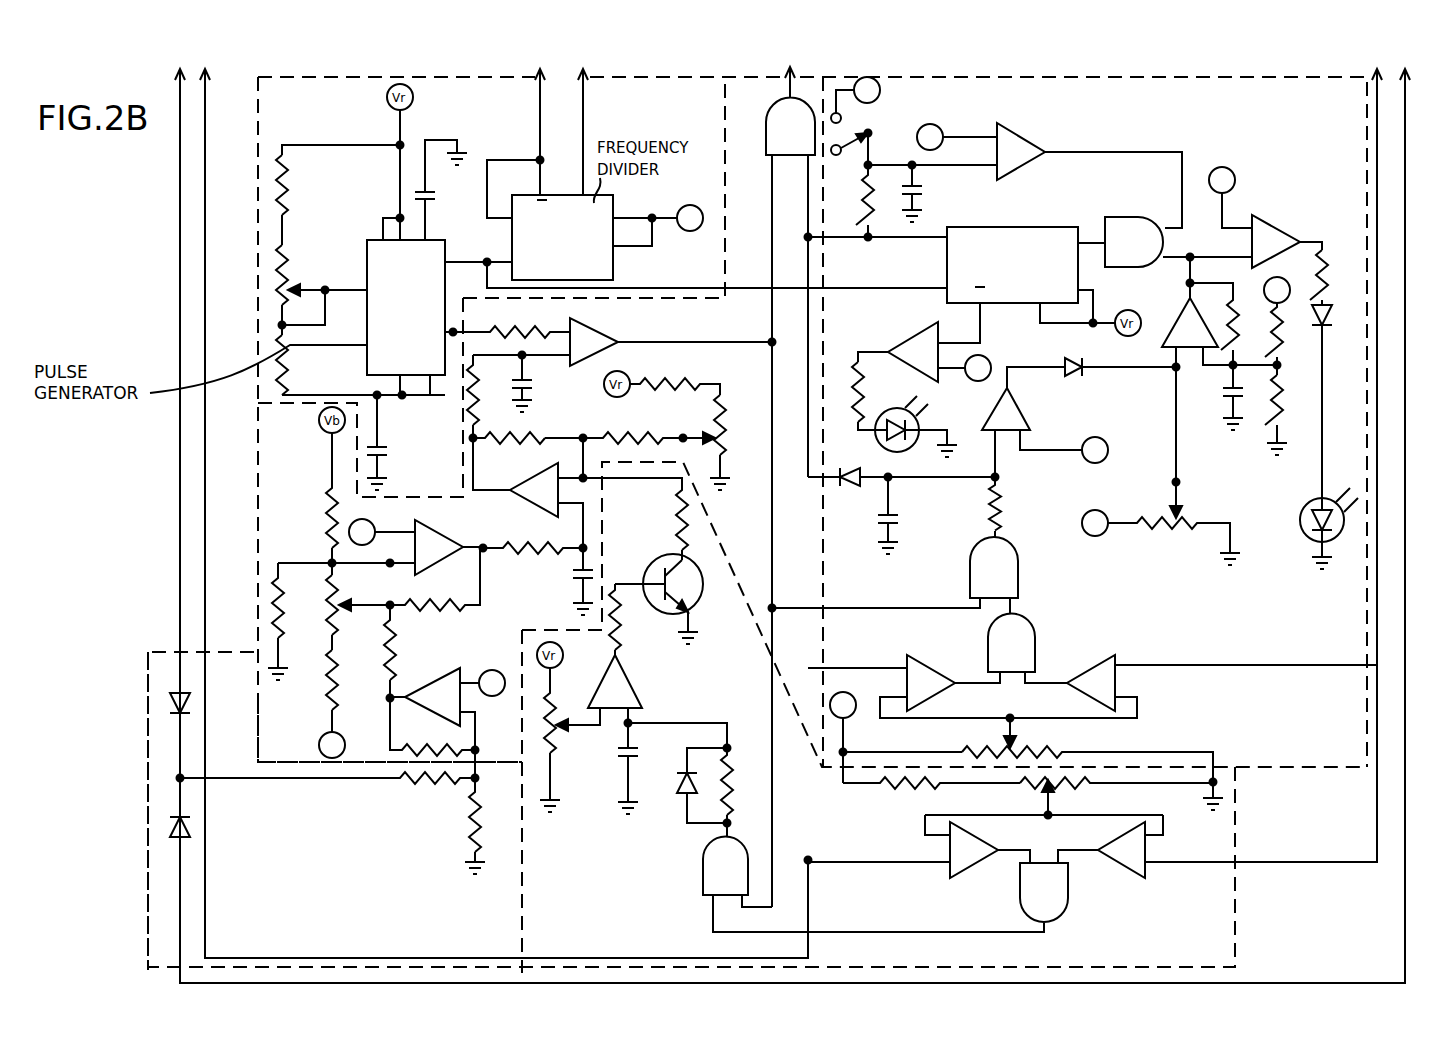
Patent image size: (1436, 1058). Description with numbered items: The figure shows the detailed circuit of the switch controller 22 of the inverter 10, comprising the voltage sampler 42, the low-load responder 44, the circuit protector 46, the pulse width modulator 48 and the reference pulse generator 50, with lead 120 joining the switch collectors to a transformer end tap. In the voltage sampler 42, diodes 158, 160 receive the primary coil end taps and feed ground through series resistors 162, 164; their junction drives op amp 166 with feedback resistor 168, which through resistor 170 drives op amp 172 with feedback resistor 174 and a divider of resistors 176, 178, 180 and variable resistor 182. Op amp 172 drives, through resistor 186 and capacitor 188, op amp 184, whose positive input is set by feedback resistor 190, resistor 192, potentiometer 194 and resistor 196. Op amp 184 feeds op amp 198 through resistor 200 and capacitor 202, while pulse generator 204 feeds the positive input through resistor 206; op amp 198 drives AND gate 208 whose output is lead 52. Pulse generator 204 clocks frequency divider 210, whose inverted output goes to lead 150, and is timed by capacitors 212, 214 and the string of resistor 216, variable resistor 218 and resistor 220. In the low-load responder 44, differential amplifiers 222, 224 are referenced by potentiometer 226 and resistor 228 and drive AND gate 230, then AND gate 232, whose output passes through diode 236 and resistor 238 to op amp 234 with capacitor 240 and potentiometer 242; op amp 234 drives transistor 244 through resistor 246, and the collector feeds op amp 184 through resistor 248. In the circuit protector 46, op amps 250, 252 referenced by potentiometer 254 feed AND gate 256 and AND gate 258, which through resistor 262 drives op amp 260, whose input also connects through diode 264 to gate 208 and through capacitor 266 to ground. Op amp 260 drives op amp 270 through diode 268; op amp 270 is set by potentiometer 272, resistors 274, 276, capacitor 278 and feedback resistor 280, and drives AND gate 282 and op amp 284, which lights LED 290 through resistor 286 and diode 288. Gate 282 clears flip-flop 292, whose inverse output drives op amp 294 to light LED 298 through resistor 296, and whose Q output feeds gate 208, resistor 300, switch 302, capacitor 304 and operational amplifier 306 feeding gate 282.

The inverter 10 is at (143, 193).
The switch controller 22 is at (170, 252).
The voltage sampler 42 is at (148, 652).
The low-load responder 44 is at (1235, 920).
The circuit protector 46 is at (1367, 180).
The pulse width modulator 48 is at (258, 560).
The reference pulse generator 50 is at (258, 157).
The lead 52 is at (786, 84).
The lead 120 is at (180, 335).
The lead 150 is at (540, 108).
The diode 158 is at (170, 703).
The diode 160 is at (170, 828).
The resistor 162 is at (412, 790).
The resistor 164 is at (468, 835).
The op amp 166 is at (418, 680).
The feedback resistor 168 is at (408, 740).
The resistor 170 is at (378, 660).
The op amp 172 is at (440, 530).
The feedback resistor 174 is at (440, 612).
The resistor 176 is at (328, 512).
The resistor 178 is at (268, 605).
The resistor 180 is at (326, 695).
The variable resistor 182 is at (322, 606).
The op amp 184 is at (535, 480).
The resistor 186 is at (528, 545).
The capacitor 188 is at (573, 574).
The feedback resistor 190 is at (528, 430).
The resistor 192 is at (655, 428).
The potentiometer 194 is at (728, 415).
The resistor 196 is at (685, 378).
The op amp 198 is at (600, 328).
The resistor 200 is at (470, 410).
The capacitor 202 is at (532, 378).
The pulse generator 204 is at (406, 307).
The resistor 206 is at (520, 322).
The AND gate 208 is at (766, 123).
The frequency divider 210 is at (595, 174).
The capacitor 212 is at (437, 207).
The capacitor 214 is at (391, 442).
The resistor 216 is at (290, 360).
The variable resistor 218 is at (292, 278).
The resistor 220 is at (290, 183).
The differential amplifier 222 is at (970, 870).
The differential amplifier 224 is at (1122, 872).
The potentiometer 226 is at (1078, 792).
The resistor 228 is at (900, 790).
The AND gate 230 is at (1044, 897).
The AND gate 232 is at (874, 884).
The op amp 234 is at (620, 692).
The diode 236 is at (677, 790).
The resistor 238 is at (735, 775).
The capacitor 240 is at (612, 758).
The potentiometer 242 is at (552, 775).
The transistor 244 is at (700, 600).
The resistor 246 is at (622, 628).
The resistor 248 is at (668, 512).
The op amp 250 is at (930, 660).
The op amp 252 is at (1095, 660).
The potentiometer 254 is at (1058, 745).
The AND gate 256 is at (1011, 649).
The AND gate 258 is at (895, 575).
The op amp 260 is at (1022, 410).
The resistor 262 is at (1006, 515).
The diode 264 is at (848, 488).
The capacitor 266 is at (902, 516).
The diode 268 is at (1068, 357).
The operational amplifier 270 is at (1168, 318).
The potentiometer 272 is at (1165, 530).
The resistor 274 is at (1290, 340).
The resistor 276 is at (1290, 408).
The capacitor 278 is at (1223, 390).
The feedback resistor 280 is at (1230, 295).
The AND gate 282 is at (1165, 242).
The op amp 284 is at (1270, 222).
The resistor 286 is at (1330, 255).
The diode 288 is at (1332, 318).
The LED 290 is at (1302, 527).
The flip-flop 292 is at (1022, 227).
The op amp 294 is at (905, 335).
The resistor 296 is at (872, 400).
The LED 298 is at (876, 440).
The resistor 300 is at (860, 200).
The switch 302 is at (862, 136).
The capacitor 304 is at (922, 190).
The operational amplifier 306 is at (1018, 130).